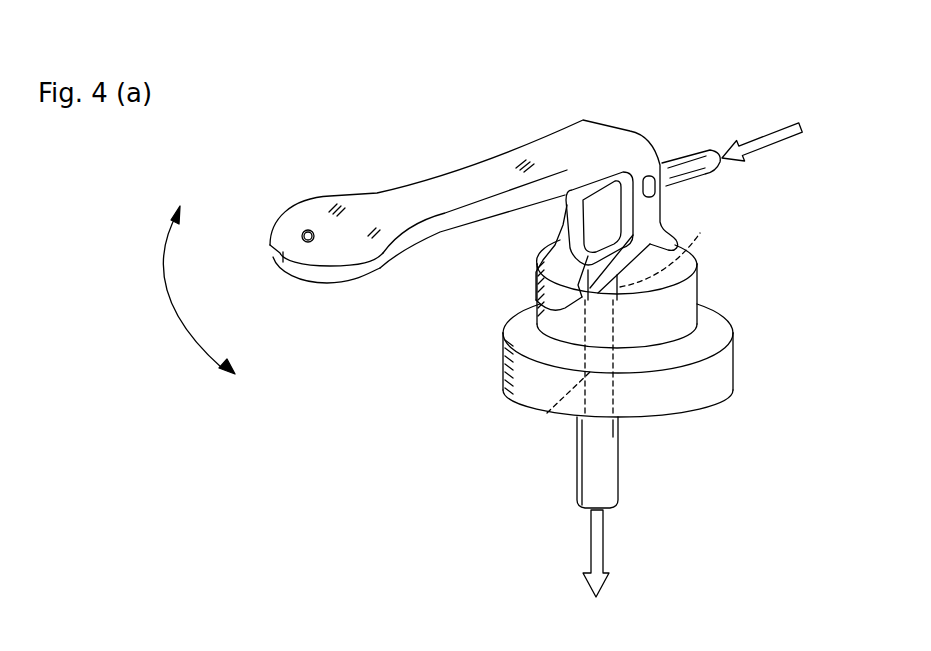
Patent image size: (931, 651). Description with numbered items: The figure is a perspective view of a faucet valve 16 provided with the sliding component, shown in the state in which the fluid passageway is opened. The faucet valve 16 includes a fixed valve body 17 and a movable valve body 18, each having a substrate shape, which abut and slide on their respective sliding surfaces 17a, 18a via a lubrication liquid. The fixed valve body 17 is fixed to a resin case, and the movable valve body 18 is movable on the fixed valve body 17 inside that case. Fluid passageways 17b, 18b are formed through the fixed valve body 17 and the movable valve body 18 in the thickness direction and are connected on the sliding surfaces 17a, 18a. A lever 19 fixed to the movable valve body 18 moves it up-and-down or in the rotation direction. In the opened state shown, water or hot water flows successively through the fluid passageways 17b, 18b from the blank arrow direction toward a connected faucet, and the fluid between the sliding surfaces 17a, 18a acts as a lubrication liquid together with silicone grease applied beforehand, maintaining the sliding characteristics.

The faucet valve 16 is at (686, 78).
The fixed valve body 17 is at (606, 389).
The sliding surface 17a is at (523, 343).
The fluid passageway 17b is at (565, 389).
The movable valve body 18 is at (630, 282).
The sliding surface 18a is at (540, 318).
The fluid passageway 18b is at (700, 233).
The lever 19 is at (305, 270).